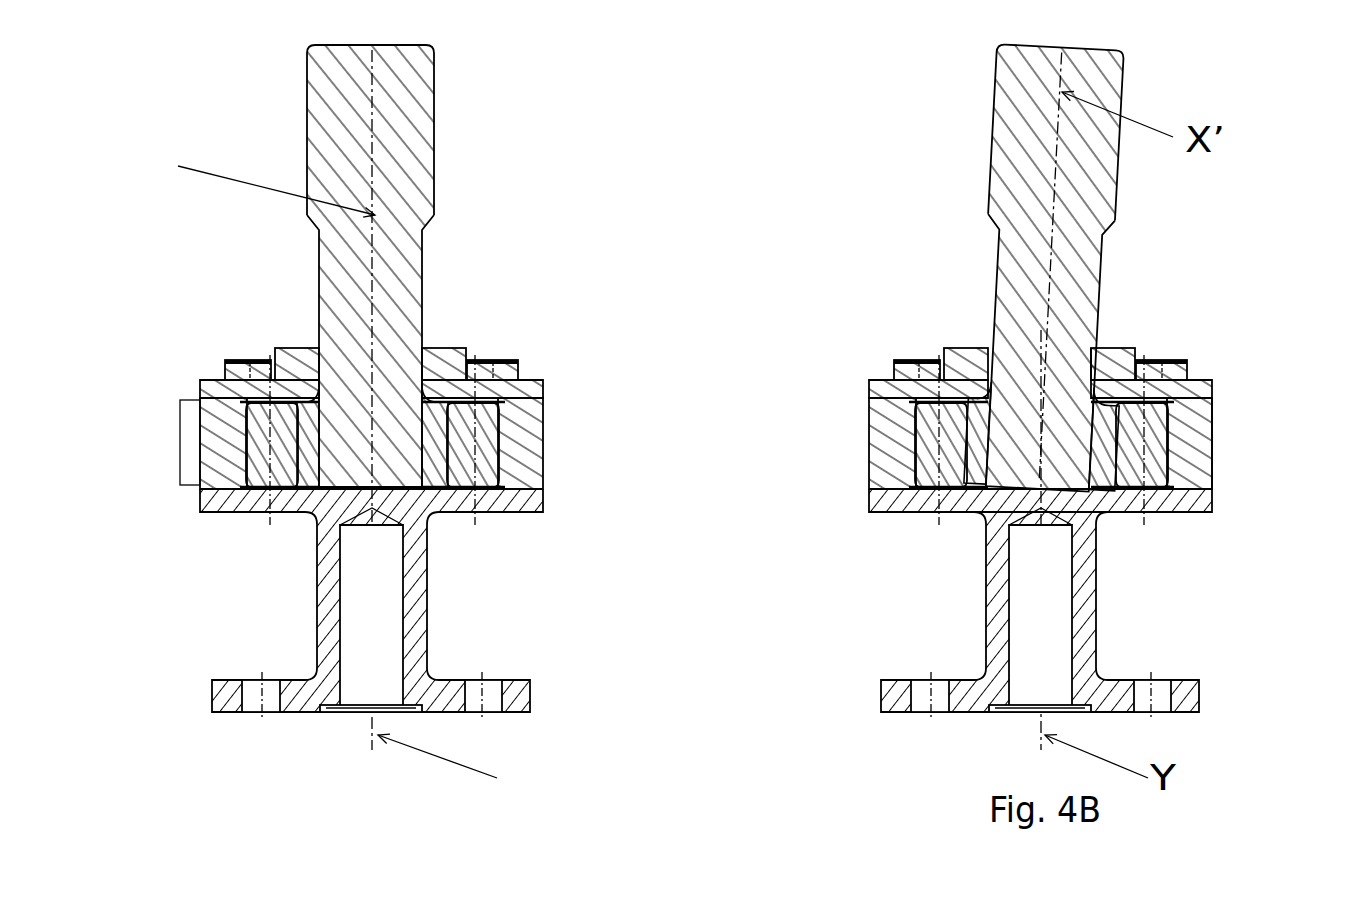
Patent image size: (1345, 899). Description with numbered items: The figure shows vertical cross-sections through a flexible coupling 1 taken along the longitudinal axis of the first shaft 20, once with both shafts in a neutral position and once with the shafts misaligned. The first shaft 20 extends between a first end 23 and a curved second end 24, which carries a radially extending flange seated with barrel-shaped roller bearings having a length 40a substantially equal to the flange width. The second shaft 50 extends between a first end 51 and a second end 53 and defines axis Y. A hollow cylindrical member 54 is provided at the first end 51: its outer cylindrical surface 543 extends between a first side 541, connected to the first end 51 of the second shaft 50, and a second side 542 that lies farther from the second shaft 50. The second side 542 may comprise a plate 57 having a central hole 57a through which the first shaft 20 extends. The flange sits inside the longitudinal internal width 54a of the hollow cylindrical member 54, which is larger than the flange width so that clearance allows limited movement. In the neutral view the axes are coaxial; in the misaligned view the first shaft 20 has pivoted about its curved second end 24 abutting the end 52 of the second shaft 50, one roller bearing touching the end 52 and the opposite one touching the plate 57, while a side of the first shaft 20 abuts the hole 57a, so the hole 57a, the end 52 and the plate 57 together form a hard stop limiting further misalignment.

In FIG. 4A, the bearing unit 1 is at (377, 437).
In FIG. 4A, the first shaft 20 is at (403, 260).
In FIG. 4B, the first shaft 20 is at (923, 315).
In FIG. 4A, the first end 23 is at (405, 45).
In FIG. 4B, the first end 23 is at (928, 132).
In FIG. 4A, the second end 24 is at (405, 487).
In FIG. 4B, the second end 24 is at (953, 498).
In FIG. 4A, the length 40a is at (180, 444).
In FIG. 4A, the second shaft 50 is at (417, 634).
In FIG. 4B, the second shaft 50 is at (990, 612).
In FIG. 4A, the first end 51 is at (318, 526).
In FIG. 4B, the first end 51 is at (1111, 596).
In FIG. 4A, the end 52 is at (530, 508).
In FIG. 4B, the end 52 is at (972, 518).
In FIG. 4A, the second end 53 is at (430, 664).
In FIG. 4B, the second end 53 is at (965, 701).
In FIG. 4A, the hollow cylindrical member 54 is at (223, 492).
In FIG. 4B, the hollow cylindrical member 54 is at (1035, 382).
In FIG. 4A, the longitudinal internal width 54a is at (548, 398).
In FIG. 4B, the longitudinal internal width 54a is at (952, 445).
In FIG. 4B, the first side 541 is at (1099, 533).
In FIG. 4A, the second side 542 is at (226, 392).
In FIG. 4B, the second side 542 is at (1091, 326).
In FIG. 4B, the outer cylindrical surface 543 is at (1275, 443).
In FIG. 4A, the plate 57 is at (427, 332).
In FIG. 4B, the plate 57 is at (917, 291).
In FIG. 4A, the hole 57a is at (450, 373).
In FIG. 4B, the hole 57a is at (933, 325).